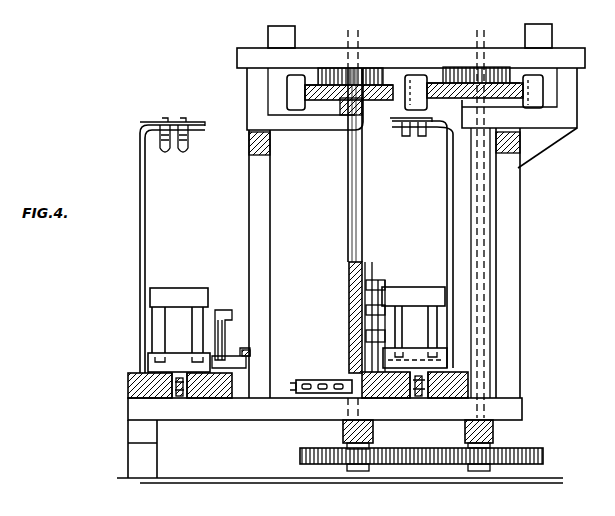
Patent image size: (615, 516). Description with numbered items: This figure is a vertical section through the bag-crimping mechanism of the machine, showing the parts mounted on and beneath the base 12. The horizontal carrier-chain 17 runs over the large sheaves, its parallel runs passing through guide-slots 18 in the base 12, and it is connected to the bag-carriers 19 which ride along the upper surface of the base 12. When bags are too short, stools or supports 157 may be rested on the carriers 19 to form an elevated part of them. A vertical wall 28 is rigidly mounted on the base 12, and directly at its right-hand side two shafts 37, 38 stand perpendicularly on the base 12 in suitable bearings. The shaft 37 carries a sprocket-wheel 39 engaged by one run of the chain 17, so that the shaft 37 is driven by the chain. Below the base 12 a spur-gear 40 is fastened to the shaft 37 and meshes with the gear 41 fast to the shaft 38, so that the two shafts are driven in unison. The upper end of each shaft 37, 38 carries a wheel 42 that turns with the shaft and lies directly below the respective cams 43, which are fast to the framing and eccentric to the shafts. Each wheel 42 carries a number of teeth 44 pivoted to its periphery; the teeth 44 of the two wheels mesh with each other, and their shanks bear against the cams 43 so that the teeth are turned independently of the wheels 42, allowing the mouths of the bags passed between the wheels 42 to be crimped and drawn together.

The base 12 is at (128, 389).
The carrier-chain 17 is at (182, 398).
The guide-slots 18 is at (172, 398).
The bag-carriers 19 is at (178, 353).
The stools or supports 157 is at (190, 283).
The vertical wall 28 is at (348, 309).
The shaft 37 is at (362, 188).
The shaft 38 is at (480, 190).
The sprocket-wheel 39 is at (330, 380).
The spur-gear 40 is at (300, 458).
The gear 41 is at (543, 455).
The wheel 42 is at (334, 100).
The cams 43 is at (360, 72).
The teeth 44 is at (287, 93).